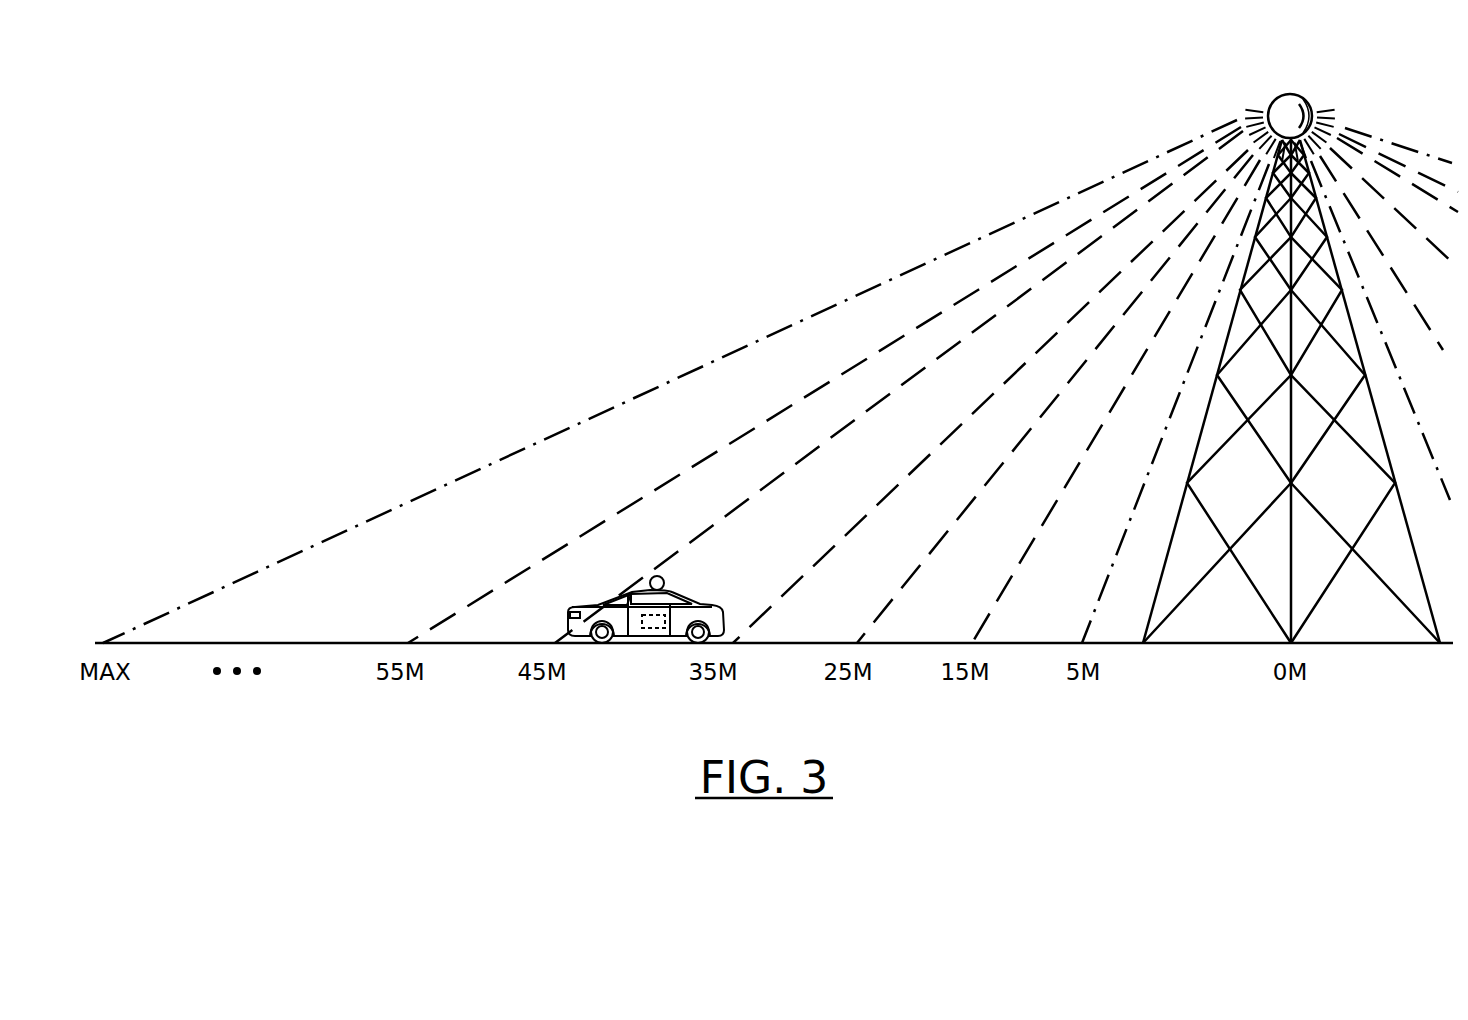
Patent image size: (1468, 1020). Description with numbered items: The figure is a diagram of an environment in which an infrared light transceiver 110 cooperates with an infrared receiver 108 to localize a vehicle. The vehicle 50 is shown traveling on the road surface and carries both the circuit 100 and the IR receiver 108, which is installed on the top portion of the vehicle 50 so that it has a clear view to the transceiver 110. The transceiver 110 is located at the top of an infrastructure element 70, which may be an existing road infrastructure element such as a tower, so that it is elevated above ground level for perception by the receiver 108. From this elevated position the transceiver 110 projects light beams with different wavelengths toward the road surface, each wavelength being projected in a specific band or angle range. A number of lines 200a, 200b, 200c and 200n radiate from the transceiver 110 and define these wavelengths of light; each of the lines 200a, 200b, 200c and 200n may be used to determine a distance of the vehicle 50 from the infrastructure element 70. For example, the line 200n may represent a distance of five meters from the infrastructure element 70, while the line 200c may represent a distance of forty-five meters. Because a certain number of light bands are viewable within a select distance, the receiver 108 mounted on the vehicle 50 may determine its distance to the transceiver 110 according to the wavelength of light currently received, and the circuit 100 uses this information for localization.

The infrared light transceiver 110 is at (1283, 97).
The infrastructure element 70 is at (1252, 588).
The line 200a is at (675, 377).
The line 200b is at (697, 463).
The line 200c is at (752, 495).
The line 200n is at (1088, 623).
The vehicle 50 is at (583, 607).
The circuit 100 is at (647, 635).
The infrared receiver 108 is at (662, 583).